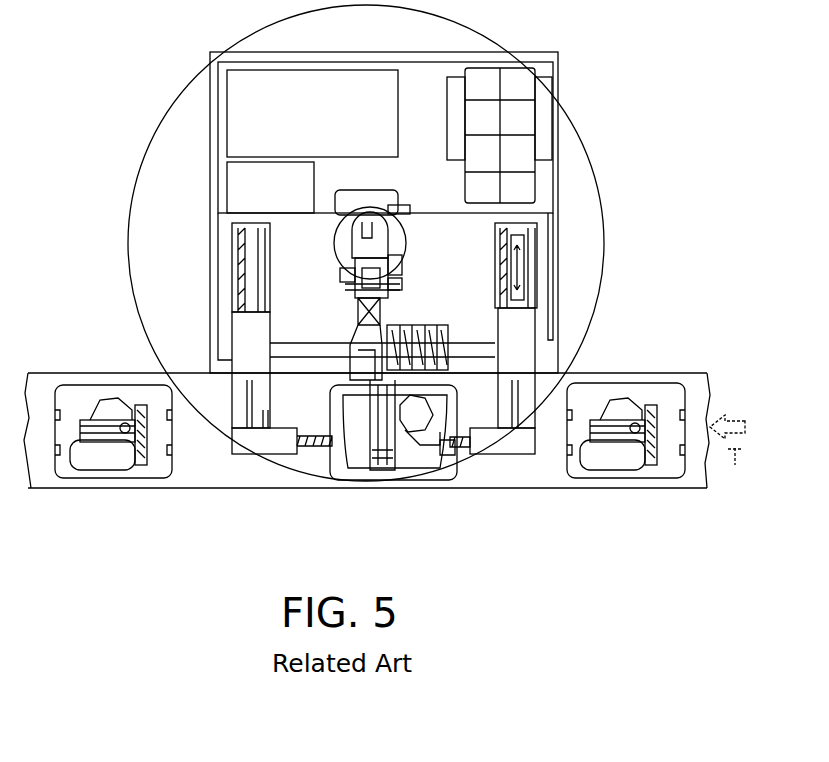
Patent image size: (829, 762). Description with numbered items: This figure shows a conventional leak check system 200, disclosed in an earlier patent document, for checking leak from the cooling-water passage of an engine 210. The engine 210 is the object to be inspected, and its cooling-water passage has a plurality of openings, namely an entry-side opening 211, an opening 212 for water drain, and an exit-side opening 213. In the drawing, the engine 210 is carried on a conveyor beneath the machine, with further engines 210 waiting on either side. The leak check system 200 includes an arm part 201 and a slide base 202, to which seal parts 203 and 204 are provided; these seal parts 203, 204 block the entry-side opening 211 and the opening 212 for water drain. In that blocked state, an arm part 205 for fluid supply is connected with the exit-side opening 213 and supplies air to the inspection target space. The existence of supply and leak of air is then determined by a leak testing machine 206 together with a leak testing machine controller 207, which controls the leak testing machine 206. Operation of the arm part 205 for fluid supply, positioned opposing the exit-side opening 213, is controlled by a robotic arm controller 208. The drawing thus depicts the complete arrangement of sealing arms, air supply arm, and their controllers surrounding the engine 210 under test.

The leak check system 200 is at (584, 126).
The arm part 201 is at (228, 328).
The slide base 202 is at (408, 317).
The seal part 203 is at (300, 450).
The seal part 204 is at (355, 375).
The arm part for fluid supply 205 is at (360, 187).
The leak testing machine 206 is at (218, 188).
The leak testing machine controller 207 is at (228, 107).
The robotic arm controller 208 is at (547, 62).
The engine 210 is at (128, 470).
The entry-side opening 211 is at (430, 448).
The opening for water drain 212 is at (447, 447).
The exit-side opening 213 is at (331, 450).